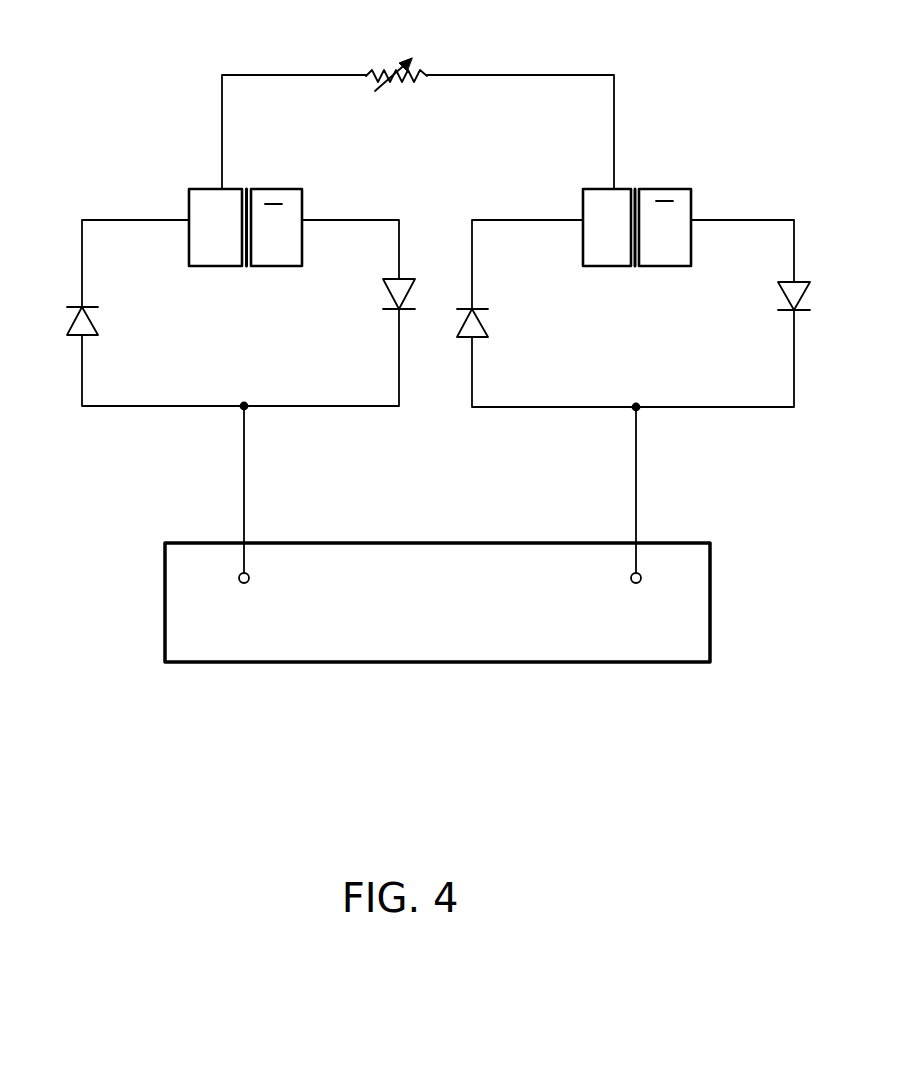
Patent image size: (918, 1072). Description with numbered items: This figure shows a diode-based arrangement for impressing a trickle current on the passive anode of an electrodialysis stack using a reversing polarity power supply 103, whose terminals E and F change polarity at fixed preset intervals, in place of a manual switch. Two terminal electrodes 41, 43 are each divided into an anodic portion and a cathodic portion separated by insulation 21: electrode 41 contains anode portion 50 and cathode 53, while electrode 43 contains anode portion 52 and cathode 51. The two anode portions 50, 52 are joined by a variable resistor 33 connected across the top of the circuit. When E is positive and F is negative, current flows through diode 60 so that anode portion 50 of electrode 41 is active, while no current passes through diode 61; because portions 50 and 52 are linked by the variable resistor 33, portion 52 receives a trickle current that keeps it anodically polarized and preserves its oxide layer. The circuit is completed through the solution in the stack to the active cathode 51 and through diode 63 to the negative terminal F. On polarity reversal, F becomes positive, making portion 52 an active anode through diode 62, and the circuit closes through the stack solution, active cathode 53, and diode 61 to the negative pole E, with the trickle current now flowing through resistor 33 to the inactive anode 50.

The variable resistor 33 is at (394, 62).
The terminal electrode 41 is at (271, 193).
The terminal electrode 43 is at (659, 191).
The anode portion 50 is at (215, 227).
The active cathode 53 is at (276, 227).
The anode portion 52 is at (607, 227).
The active cathode 51 is at (665, 227).
The insulation 21 is at (244, 263).
The diode 60 is at (103, 322).
The diode 61 is at (397, 278).
The diode 62 is at (488, 330).
The diode 63 is at (789, 280).
The reversing polarity power supply 103 is at (463, 667).